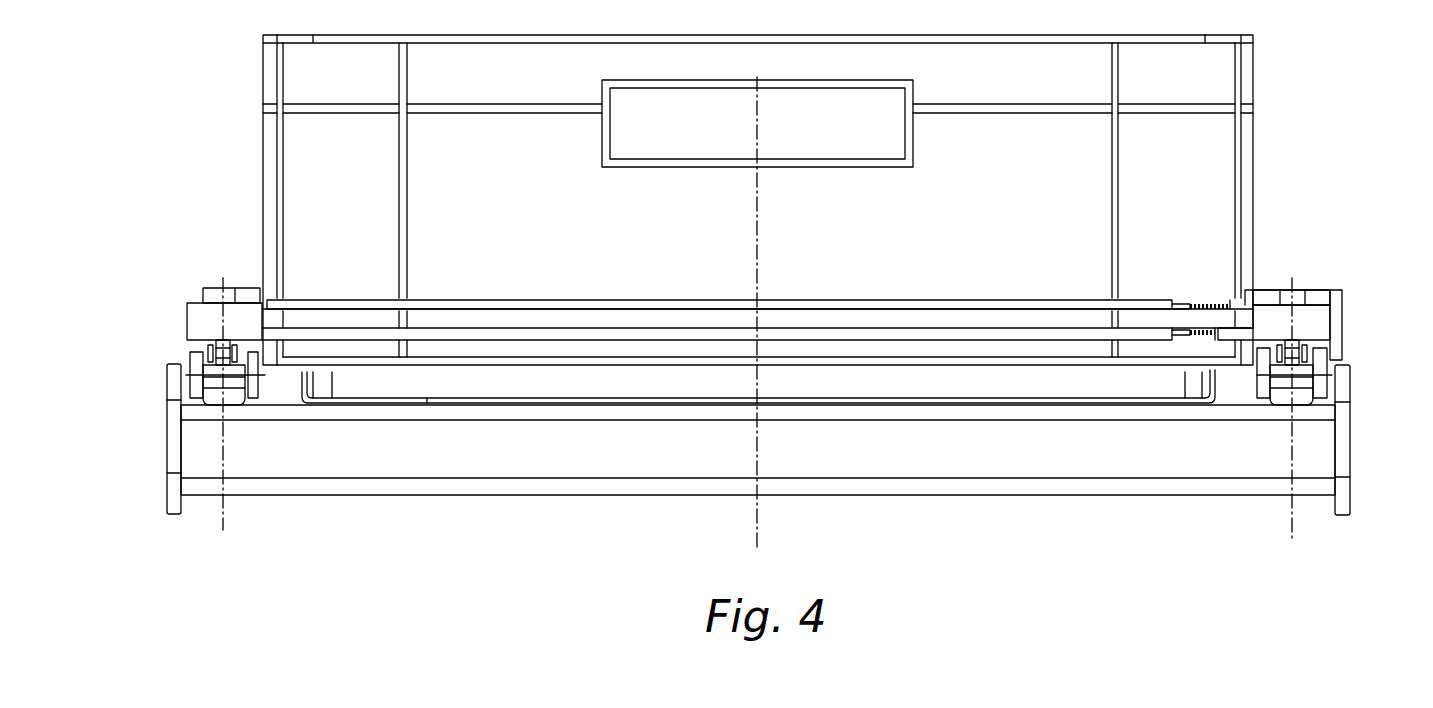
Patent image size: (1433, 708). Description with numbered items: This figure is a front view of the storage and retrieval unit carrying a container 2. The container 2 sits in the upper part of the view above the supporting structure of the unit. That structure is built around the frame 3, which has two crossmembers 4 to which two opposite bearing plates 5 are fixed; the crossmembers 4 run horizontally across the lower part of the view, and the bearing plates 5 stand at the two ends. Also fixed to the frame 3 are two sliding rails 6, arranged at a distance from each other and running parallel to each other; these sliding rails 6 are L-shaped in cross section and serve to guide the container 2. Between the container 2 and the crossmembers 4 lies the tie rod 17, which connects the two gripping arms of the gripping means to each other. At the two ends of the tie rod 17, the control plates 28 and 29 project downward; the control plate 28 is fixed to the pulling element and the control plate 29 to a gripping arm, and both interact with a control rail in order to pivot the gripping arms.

The container 2 is at (1258, 88).
The frame 3 is at (1352, 392).
The crossmember 4 is at (1150, 472).
The bearing plate 5 is at (168, 455).
The sliding rail 6 is at (350, 402).
The tie rod 17 is at (514, 317).
The control plate 28 is at (195, 374).
The control plate 29 is at (253, 360).